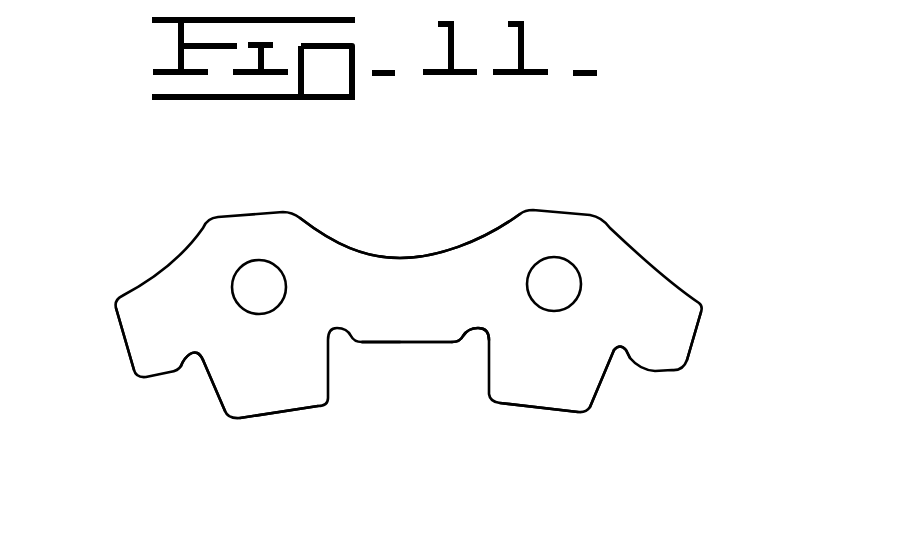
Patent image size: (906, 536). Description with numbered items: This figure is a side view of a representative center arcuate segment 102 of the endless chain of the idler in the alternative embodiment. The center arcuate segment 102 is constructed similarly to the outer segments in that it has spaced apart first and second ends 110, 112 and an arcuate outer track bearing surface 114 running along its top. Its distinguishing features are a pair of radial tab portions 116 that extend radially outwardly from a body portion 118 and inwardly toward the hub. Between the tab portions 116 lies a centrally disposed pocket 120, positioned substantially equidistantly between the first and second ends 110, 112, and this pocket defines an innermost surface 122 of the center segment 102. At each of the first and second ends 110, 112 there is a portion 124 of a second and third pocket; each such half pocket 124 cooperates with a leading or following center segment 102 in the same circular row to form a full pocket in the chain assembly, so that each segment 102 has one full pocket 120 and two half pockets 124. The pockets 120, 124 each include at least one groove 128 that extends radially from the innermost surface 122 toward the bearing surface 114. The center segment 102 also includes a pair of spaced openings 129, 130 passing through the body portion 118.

The center arcuate segment 102 is at (577, 212).
The first end 110 is at (700, 343).
The second end 112 is at (120, 334).
The arcuate outer track bearing surface 114 is at (383, 253).
The radial tab portion 116 is at (267, 415).
The body portion 118 is at (458, 286).
The centrally disposed pocket 120 is at (386, 369).
The innermost surface 122 is at (378, 348).
The half pocket portion 124 is at (200, 393).
The groove 128 is at (195, 352).
The opening 129 is at (243, 265).
The opening 130 is at (573, 285).